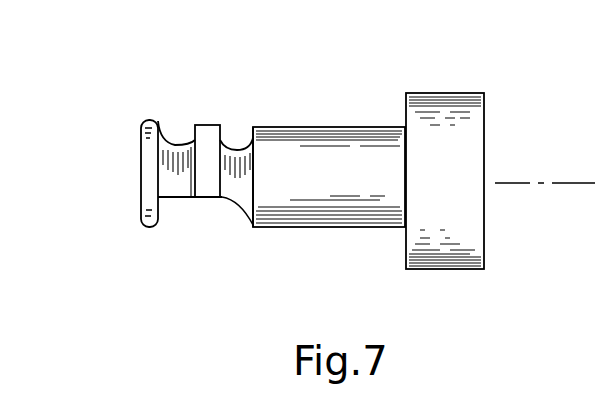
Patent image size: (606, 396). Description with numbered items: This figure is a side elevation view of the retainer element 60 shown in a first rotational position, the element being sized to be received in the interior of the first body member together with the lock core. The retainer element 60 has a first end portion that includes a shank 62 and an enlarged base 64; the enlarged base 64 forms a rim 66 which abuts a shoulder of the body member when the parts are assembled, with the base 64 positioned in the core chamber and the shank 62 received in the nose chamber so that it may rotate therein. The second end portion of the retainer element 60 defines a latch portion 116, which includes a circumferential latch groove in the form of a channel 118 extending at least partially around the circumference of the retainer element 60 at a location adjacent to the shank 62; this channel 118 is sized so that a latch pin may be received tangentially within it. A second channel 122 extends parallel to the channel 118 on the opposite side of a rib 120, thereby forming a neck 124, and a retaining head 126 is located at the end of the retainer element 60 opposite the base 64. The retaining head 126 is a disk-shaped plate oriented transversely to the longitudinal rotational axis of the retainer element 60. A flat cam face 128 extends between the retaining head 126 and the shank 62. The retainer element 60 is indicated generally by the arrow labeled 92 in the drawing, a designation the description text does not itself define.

The retainer element 60 is at (442, 60).
The shank 62 is at (345, 215).
The enlarged base 64 is at (472, 115).
The rim 66 is at (405, 251).
The hub 92 is at (160, 78).
The latch portion 116 is at (255, 106).
The channel 118 is at (255, 156).
The rib 120 is at (202, 170).
The second channel 122 is at (170, 128).
The neck 124 is at (170, 168).
The retaining head 126 is at (146, 205).
The flat cam face 128 is at (208, 198).